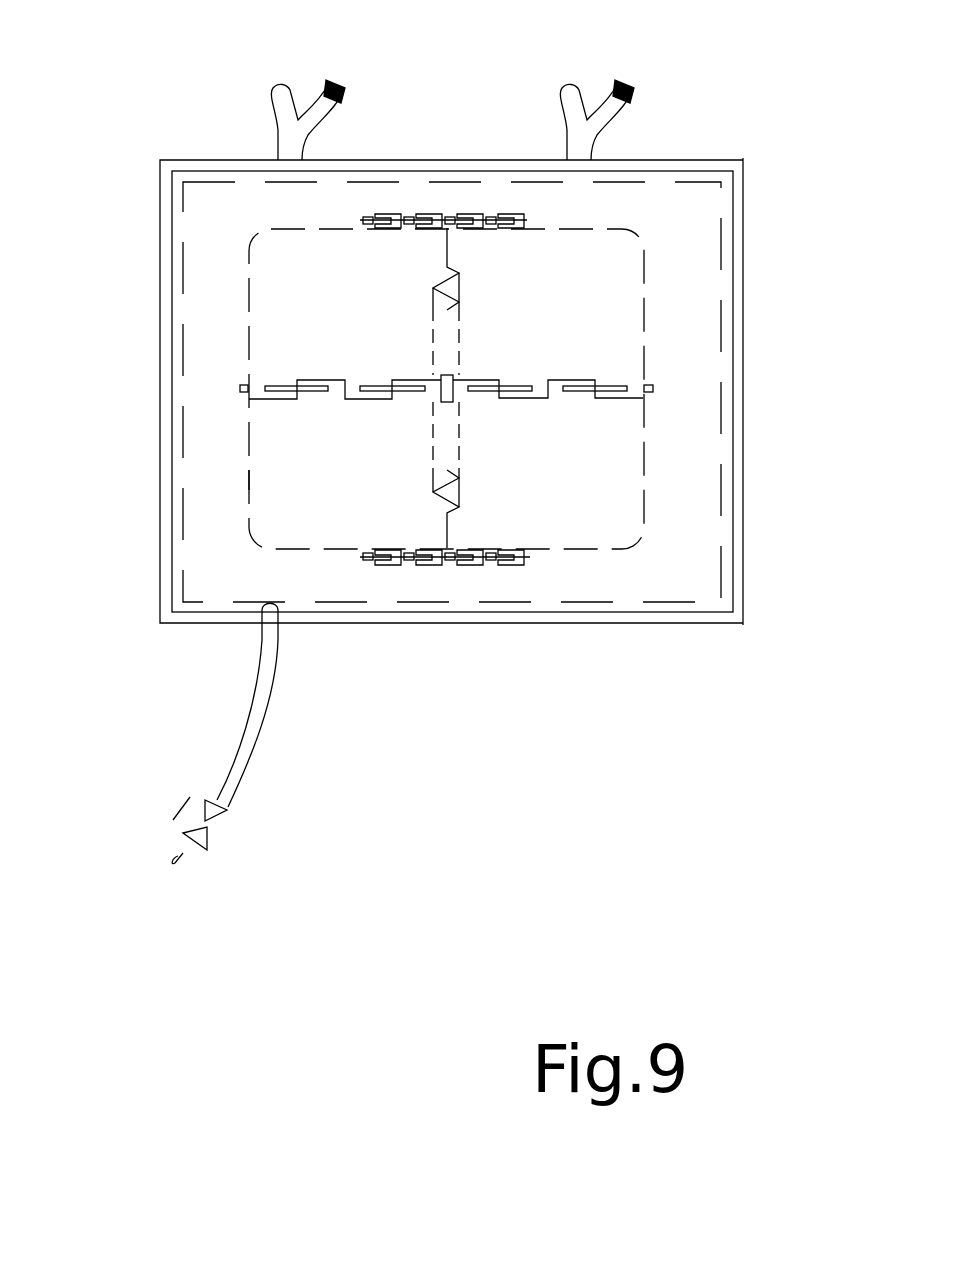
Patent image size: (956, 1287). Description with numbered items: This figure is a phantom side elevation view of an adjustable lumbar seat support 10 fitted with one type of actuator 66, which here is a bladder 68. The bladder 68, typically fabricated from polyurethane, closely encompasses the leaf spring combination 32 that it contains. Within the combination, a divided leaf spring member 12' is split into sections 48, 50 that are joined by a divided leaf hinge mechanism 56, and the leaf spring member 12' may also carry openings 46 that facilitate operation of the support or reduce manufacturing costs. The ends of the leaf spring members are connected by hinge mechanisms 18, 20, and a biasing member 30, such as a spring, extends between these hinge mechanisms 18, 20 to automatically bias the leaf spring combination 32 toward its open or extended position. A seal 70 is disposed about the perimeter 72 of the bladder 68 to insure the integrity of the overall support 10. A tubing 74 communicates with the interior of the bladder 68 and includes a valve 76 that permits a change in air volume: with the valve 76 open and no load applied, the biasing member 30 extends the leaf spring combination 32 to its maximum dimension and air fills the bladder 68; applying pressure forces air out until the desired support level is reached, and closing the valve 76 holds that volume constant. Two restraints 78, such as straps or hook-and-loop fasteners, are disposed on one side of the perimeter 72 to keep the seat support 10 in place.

The adjustable lumbar seat support 10 is at (660, 249).
The leaf spring member 12' is at (548, 389).
The hinge mechanism 18 is at (545, 565).
The hinge mechanism 20 is at (530, 205).
The biasing member 30 is at (436, 278).
The leaf spring combination 32 is at (228, 480).
The opening 46 is at (455, 402).
The section 48 is at (568, 327).
The section 50 is at (568, 506).
The divided leaf hinge mechanism 56 is at (654, 392).
The actuator 66 is at (148, 333).
The bladder 68 is at (626, 223).
The seal 70 is at (736, 416).
The perimeter 72 is at (745, 373).
The tubing 74 is at (275, 662).
The valve 76 is at (227, 812).
The restraint 78 is at (335, 112).